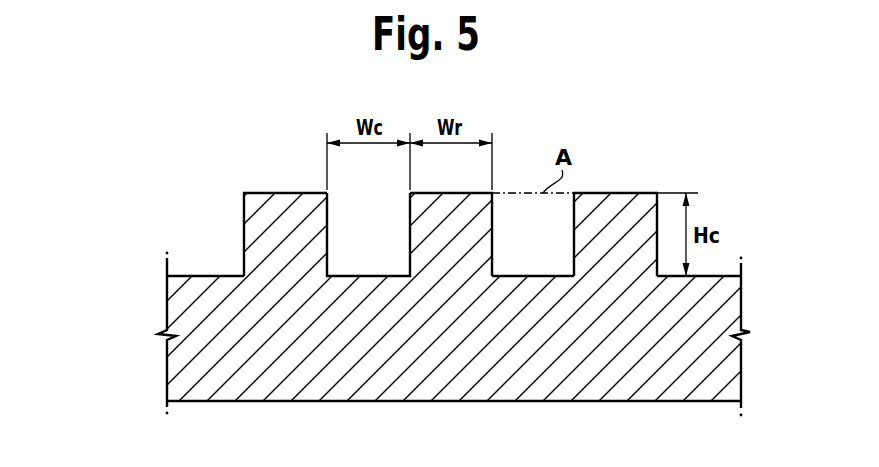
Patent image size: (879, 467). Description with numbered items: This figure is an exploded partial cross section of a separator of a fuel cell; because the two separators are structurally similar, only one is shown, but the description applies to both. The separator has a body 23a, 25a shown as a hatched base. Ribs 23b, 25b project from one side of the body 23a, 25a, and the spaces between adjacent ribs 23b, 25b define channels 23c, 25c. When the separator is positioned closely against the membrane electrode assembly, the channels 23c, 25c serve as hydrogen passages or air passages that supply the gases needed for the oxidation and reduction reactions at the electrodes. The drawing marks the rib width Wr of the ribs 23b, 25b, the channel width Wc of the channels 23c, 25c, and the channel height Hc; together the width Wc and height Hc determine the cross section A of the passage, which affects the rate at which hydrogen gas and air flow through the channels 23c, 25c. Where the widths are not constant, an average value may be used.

The body 23a is at (454, 354).
The body 25a is at (477, 401).
The rib 23b is at (212, 233).
The rib 25b is at (250, 212).
The channel 23c is at (346, 324).
The channel 25c is at (328, 251).